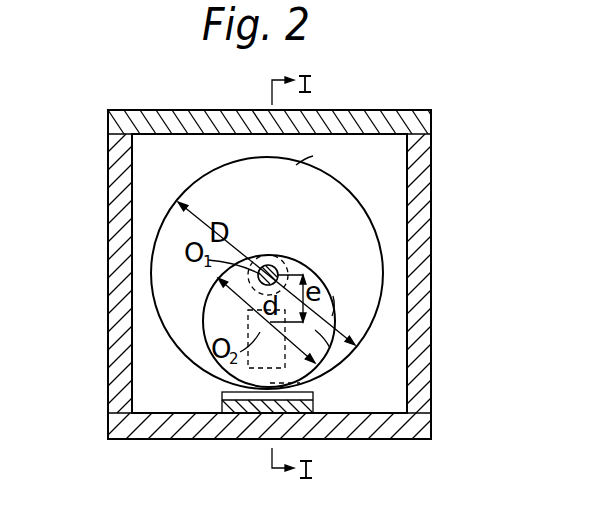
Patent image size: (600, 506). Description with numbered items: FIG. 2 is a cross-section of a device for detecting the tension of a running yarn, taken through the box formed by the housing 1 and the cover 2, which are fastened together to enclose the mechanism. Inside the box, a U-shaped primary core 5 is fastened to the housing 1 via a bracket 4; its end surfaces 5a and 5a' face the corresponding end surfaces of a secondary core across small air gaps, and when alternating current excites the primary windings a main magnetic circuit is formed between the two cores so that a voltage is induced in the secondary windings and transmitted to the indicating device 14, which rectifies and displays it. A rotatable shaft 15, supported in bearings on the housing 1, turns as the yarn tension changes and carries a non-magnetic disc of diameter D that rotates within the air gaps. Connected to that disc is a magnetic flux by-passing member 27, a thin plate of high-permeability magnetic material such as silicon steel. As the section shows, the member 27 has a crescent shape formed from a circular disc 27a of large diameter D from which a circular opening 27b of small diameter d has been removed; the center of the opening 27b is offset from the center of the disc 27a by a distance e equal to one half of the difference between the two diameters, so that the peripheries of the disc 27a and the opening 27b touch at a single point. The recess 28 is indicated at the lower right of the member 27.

The housing 1 is at (258, 255).
The cover 2 is at (269, 102).
The bracket 4 is at (243, 407).
The primary core 5 is at (253, 368).
The end surface of the primary core 5a is at (214, 339).
The end surface of the primary core 5a' is at (321, 396).
The indicating device 14 is at (441, 16).
The rotatable shaft 15 is at (273, 265).
The magnetic flux by-passing member 27 is at (328, 197).
The circular disc 27a is at (311, 170).
The removed circular opening 27b is at (333, 305).
The recess 28 is at (322, 340).